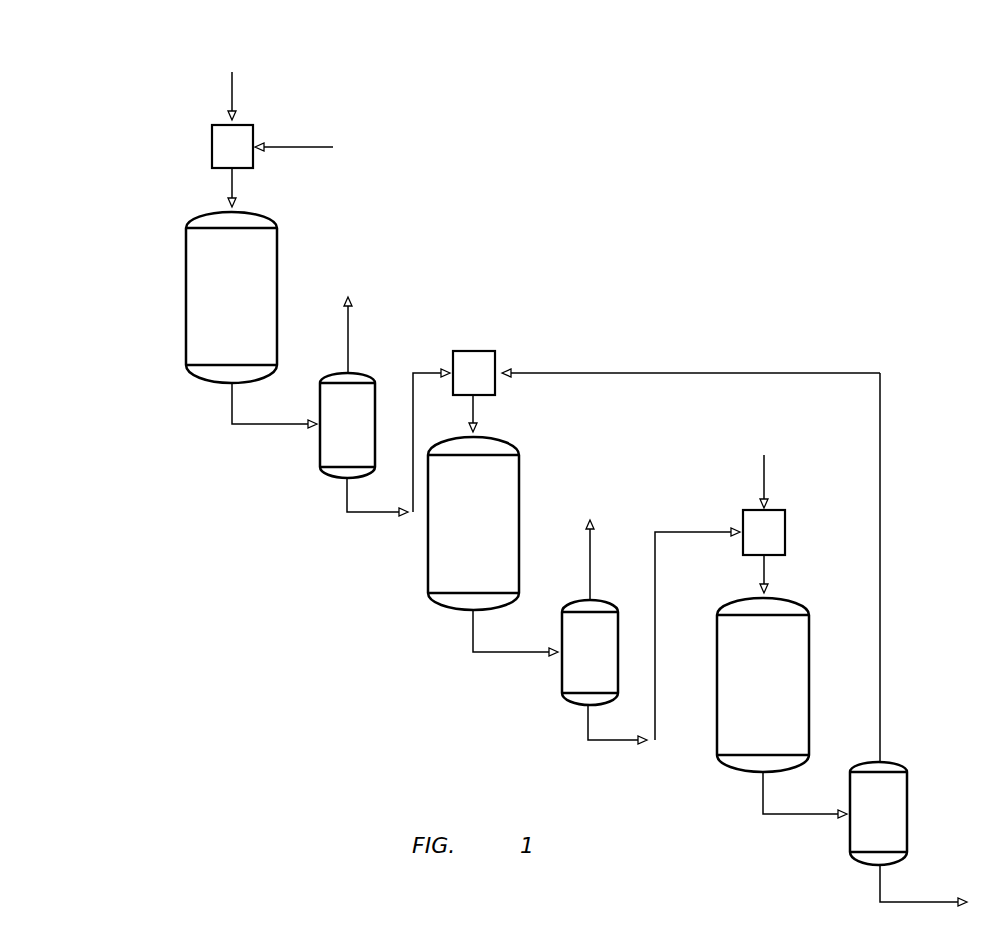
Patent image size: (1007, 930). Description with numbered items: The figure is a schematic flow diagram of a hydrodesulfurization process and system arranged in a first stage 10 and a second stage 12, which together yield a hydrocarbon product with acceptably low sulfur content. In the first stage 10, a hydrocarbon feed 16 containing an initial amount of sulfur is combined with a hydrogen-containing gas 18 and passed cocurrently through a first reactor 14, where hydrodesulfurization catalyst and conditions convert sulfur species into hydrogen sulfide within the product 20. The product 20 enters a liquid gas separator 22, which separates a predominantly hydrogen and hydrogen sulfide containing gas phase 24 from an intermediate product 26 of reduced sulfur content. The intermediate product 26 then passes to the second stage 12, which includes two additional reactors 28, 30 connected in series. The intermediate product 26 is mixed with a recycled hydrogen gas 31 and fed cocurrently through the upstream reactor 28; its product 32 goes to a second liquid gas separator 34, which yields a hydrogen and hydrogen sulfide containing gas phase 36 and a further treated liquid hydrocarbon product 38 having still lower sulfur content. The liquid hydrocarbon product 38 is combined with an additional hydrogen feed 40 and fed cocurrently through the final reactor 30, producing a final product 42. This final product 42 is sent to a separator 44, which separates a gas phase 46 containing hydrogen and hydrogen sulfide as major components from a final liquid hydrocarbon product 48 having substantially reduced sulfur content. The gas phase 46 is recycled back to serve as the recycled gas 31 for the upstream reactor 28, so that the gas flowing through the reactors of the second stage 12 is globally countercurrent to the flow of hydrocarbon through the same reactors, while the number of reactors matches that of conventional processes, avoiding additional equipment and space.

The first stage 10 is at (112, 417).
The second stage 12 is at (882, 262).
The first reactor 14 is at (280, 265).
The hydrocarbon feed 16 is at (234, 106).
The hydrogen-containing gas 18 is at (305, 147).
The product 20 is at (275, 428).
The liquid gas separator 22 is at (376, 395).
The gas phase 24 is at (349, 325).
The intermediate product 26 is at (365, 515).
The reactor 28 is at (522, 510).
The reactor 30 is at (812, 640).
The recycled hydrogen gas 31 is at (562, 372).
The product 32 is at (513, 655).
The liquid gas separator 34 is at (562, 685).
The gas phase 36 is at (591, 565).
The liquid hydrocarbon product 38 is at (615, 742).
The additional hydrogen feed 40 is at (766, 485).
The final product 42 is at (800, 815).
The separator 44 is at (908, 800).
The gas phase 46 is at (882, 713).
The final liquid hydrocarbon product 48 is at (928, 900).